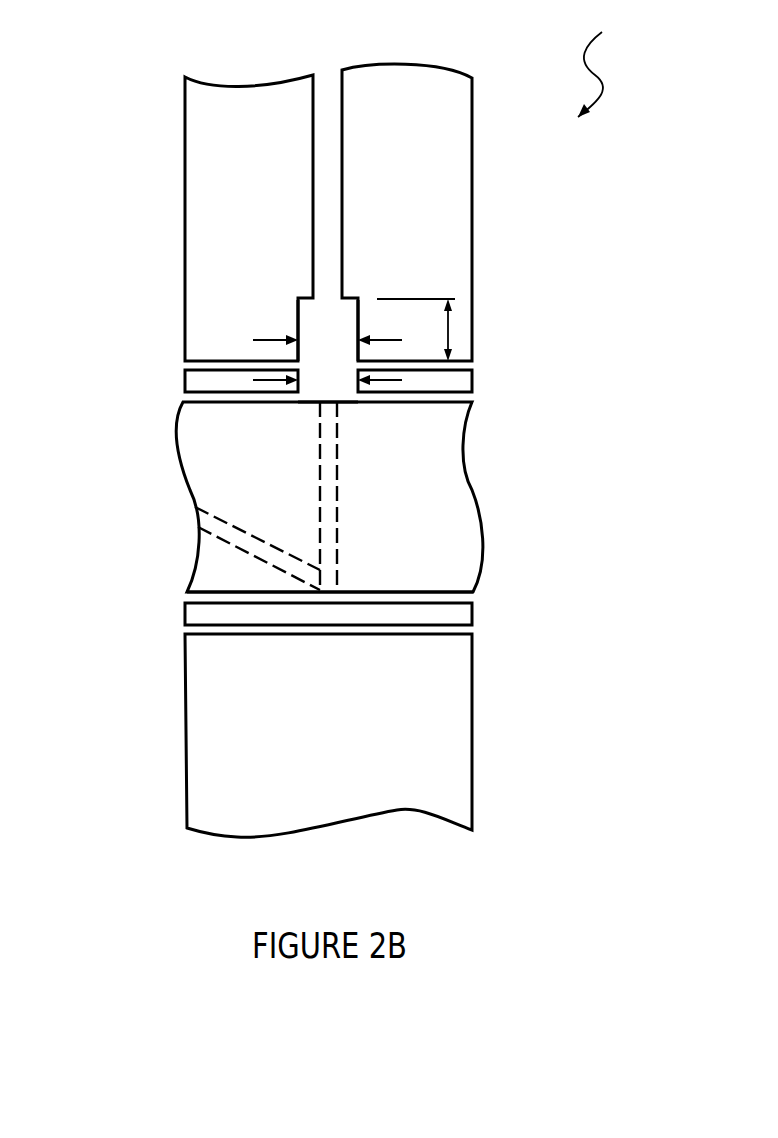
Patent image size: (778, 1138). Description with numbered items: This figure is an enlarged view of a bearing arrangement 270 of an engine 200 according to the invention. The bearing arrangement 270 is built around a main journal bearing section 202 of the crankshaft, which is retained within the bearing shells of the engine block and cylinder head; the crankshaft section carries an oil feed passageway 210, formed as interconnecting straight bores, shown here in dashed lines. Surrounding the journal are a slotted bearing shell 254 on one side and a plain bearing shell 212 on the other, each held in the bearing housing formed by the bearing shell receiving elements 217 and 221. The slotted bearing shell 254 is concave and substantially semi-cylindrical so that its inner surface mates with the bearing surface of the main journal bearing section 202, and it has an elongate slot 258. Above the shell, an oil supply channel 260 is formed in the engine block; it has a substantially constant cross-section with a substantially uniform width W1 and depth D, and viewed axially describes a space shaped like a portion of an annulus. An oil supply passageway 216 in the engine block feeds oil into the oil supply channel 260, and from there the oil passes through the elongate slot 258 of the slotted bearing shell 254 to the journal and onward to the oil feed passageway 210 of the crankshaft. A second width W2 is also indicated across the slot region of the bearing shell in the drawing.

The engine 200 is at (428, 473).
The main journal bearing section 202 is at (405, 582).
The oil feed passageway 210 is at (333, 520).
The plain bearing shell 212 is at (193, 613).
The oil supply passageway 216 is at (332, 150).
The bearing shell receiving element 217 is at (205, 117).
The bearing shell receiving element 221 is at (203, 727).
The slotted bearing shell 254 is at (470, 387).
The elongate slot 258 is at (313, 387).
The oil supply channel 260 is at (327, 324).
The bearing arrangement 270 is at (608, 62).
The width of oil supply channel W1 is at (253, 340).
The second width W2 is at (403, 380).
The depth of oil supply channel D is at (472, 332).